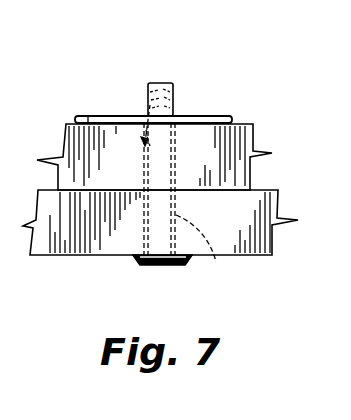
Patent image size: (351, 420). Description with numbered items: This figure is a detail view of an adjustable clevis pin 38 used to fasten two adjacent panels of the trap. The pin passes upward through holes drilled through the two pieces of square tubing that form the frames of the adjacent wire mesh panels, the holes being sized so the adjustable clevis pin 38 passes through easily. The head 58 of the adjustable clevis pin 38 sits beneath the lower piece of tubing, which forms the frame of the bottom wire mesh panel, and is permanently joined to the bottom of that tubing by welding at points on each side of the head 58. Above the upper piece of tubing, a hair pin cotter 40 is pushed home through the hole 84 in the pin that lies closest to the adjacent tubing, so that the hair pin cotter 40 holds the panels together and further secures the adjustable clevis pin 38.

The adjustable clevis pin 38 is at (158, 82).
The hair pin cotter 40 is at (196, 118).
The head 58 is at (153, 266).
The hole 84 is at (152, 104).